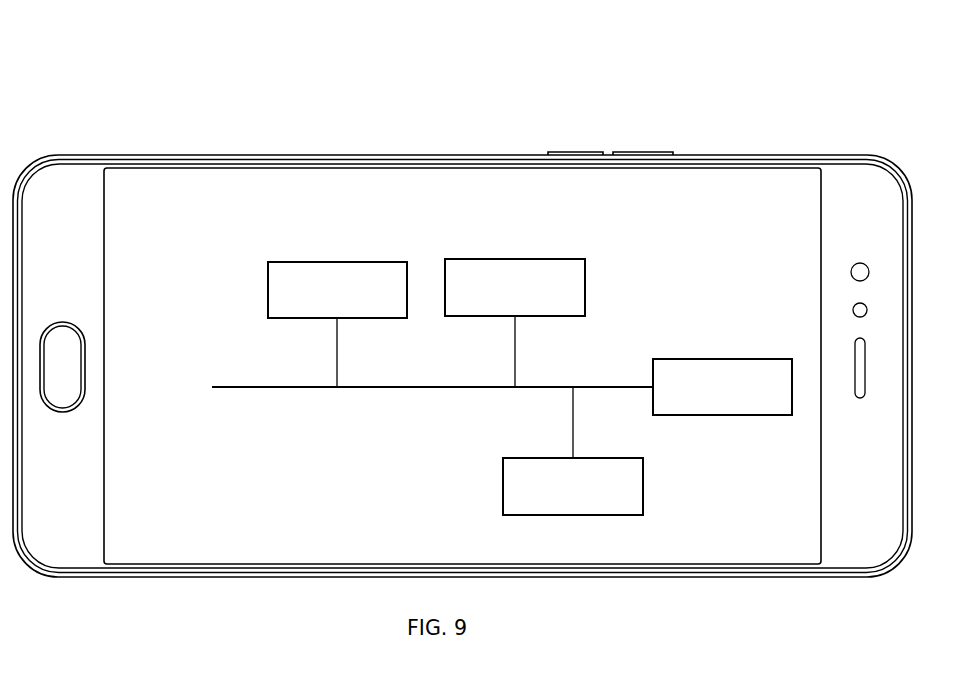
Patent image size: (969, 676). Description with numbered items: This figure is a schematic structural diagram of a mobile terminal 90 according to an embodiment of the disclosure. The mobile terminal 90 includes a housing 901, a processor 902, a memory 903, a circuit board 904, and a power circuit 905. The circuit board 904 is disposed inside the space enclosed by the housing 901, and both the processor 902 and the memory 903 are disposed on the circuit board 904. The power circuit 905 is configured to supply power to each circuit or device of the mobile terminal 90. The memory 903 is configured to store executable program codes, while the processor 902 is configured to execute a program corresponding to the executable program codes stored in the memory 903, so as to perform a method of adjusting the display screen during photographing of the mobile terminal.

The mobile terminal 90 is at (462, 300).
The housing 901 is at (480, 155).
The processor 902 is at (720, 359).
The memory 903 is at (338, 261).
The circuit board 904 is at (643, 490).
The power circuit 905 is at (515, 259).